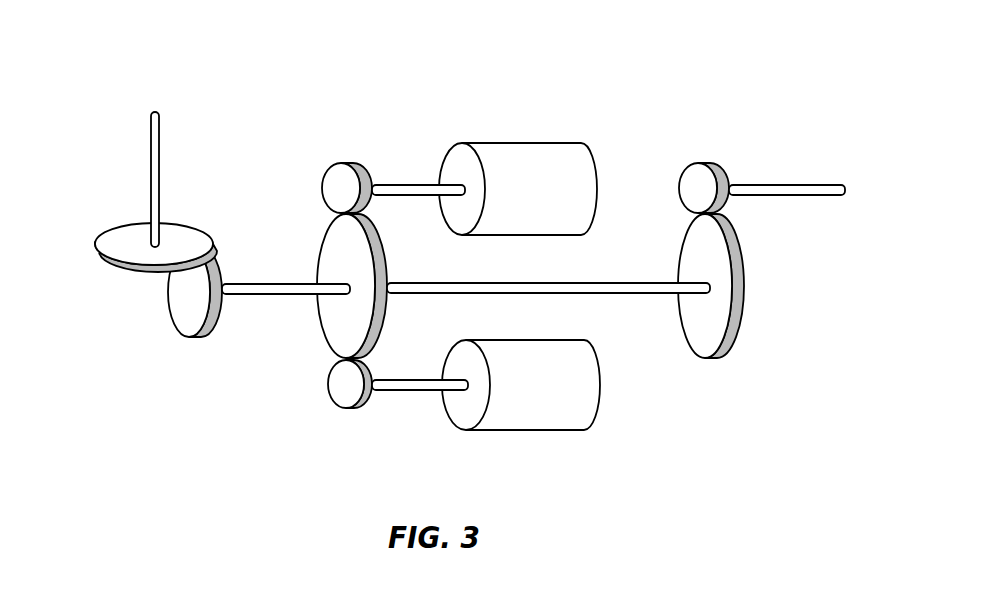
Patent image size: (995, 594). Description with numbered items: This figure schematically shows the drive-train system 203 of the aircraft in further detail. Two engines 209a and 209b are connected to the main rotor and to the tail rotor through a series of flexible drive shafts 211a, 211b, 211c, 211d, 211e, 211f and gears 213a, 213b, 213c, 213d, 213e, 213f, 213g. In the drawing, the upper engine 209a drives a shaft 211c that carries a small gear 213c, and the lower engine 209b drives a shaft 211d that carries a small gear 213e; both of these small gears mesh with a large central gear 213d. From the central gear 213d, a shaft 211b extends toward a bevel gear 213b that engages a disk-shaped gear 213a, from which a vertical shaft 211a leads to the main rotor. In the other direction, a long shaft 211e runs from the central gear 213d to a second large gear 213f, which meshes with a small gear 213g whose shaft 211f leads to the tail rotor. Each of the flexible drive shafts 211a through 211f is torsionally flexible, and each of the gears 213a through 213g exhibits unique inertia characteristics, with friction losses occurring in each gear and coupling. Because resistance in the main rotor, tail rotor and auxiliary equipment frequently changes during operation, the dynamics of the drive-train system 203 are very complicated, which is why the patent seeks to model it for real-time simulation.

The drive-train system 203 is at (423, 87).
The engine 209a is at (488, 143).
The engine 209b is at (527, 432).
The flexible drive shaft 211a is at (151, 208).
The flexible drive shaft 211b is at (297, 283).
The flexible drive shaft 211c is at (400, 184).
The flexible drive shaft 211d is at (412, 391).
The flexible drive shaft 211e is at (607, 294).
The flexible drive shaft 211f is at (777, 196).
The gear 213a is at (123, 270).
The gear 213b is at (192, 338).
The gear 213c is at (328, 172).
The gear 213d is at (388, 268).
The gear 213e is at (330, 387).
The gear 213f is at (733, 343).
The gear 213g is at (683, 172).